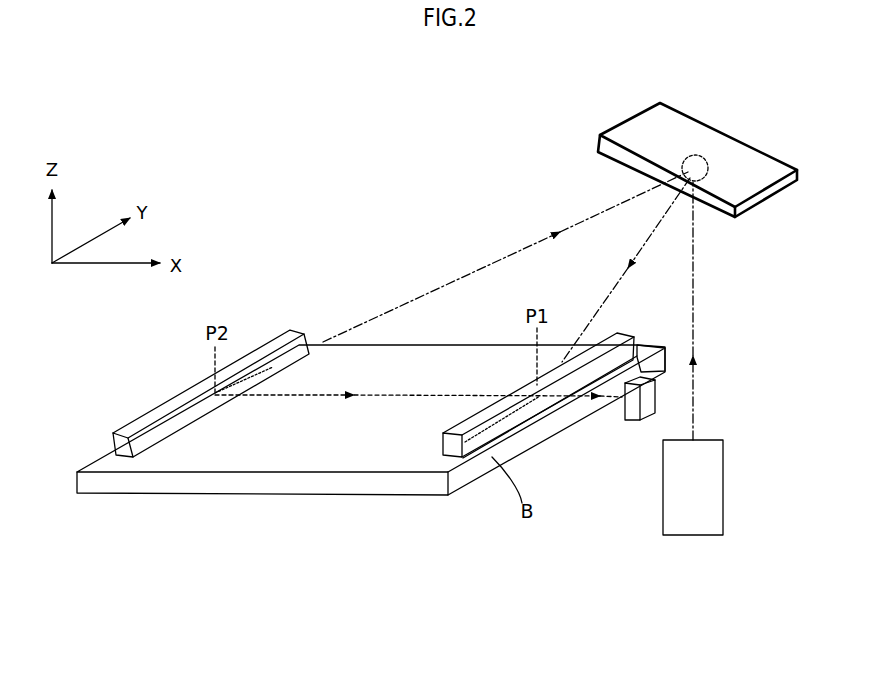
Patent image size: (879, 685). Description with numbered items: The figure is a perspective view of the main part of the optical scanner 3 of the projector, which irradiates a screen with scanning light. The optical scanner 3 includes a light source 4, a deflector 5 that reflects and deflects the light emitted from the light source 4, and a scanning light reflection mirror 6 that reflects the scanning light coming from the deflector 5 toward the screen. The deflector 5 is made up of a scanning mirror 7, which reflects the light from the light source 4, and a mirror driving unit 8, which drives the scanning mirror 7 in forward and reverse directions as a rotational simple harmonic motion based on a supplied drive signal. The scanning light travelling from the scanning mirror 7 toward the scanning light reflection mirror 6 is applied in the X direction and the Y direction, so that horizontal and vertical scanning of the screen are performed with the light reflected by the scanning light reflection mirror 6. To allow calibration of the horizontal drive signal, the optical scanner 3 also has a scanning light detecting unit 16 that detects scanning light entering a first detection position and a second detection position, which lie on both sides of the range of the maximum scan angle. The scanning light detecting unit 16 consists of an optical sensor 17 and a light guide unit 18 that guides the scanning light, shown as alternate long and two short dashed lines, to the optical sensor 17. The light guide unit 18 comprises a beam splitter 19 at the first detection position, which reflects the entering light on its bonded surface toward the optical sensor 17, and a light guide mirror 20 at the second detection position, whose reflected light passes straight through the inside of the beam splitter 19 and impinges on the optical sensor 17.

The optical scanner 3 is at (282, 131).
The light source 4 is at (724, 487).
The deflector 5 is at (735, 86).
The scanning light reflection mirror 6 is at (278, 497).
The scanning mirror 7 is at (698, 155).
The mirror driving unit 8 is at (747, 177).
The scanning light detecting unit 16 is at (498, 190).
The optical sensor 17 is at (643, 345).
The light guide unit 18 is at (353, 238).
The beam splitter 19 is at (533, 380).
The light guide mirror 20 is at (248, 353).